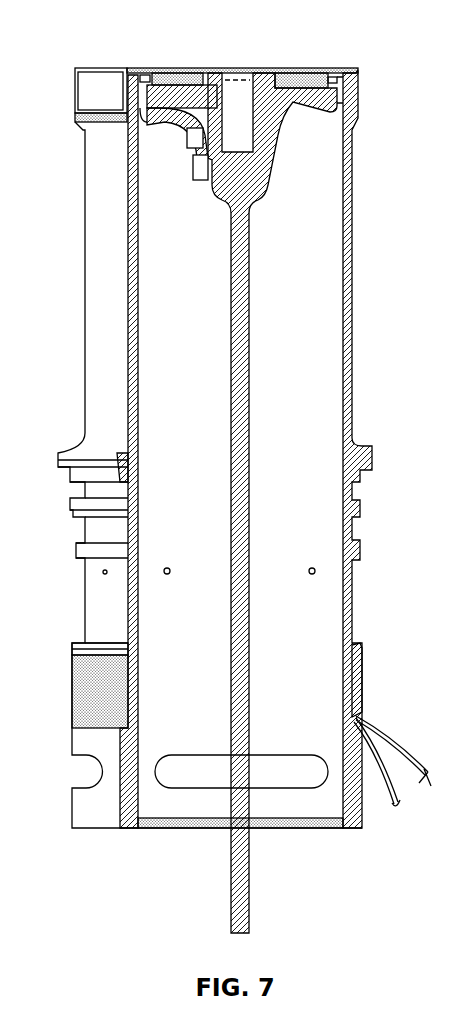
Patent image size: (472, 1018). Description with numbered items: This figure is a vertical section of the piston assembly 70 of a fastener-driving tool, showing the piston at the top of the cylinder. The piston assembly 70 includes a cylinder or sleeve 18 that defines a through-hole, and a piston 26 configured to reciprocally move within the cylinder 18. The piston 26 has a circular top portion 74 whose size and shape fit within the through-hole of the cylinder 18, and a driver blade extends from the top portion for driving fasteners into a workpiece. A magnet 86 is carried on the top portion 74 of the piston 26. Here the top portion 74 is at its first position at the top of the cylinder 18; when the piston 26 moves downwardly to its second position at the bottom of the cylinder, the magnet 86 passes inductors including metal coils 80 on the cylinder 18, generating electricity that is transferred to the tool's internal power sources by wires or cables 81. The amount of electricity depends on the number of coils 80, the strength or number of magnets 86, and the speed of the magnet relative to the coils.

The piston assembly 70 is at (377, 112).
The cylinder 18 is at (356, 243).
The top portion 74 is at (172, 92).
The magnet 86 is at (305, 70).
The piston 26 is at (179, 155).
The metal coils 80 is at (362, 683).
The wires or cables 81 is at (388, 724).